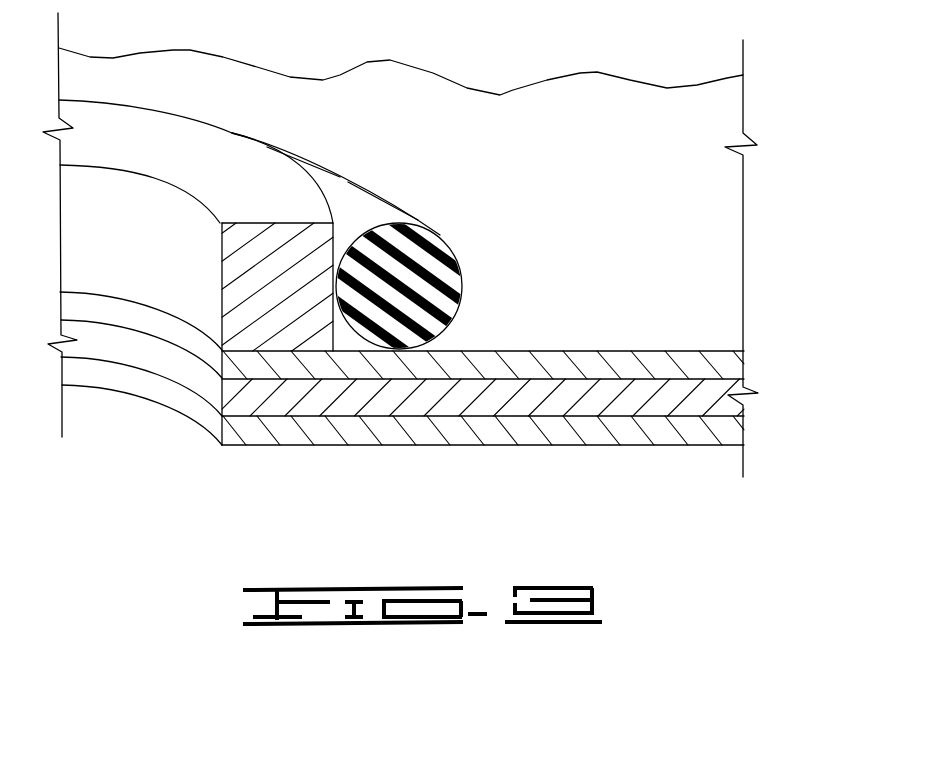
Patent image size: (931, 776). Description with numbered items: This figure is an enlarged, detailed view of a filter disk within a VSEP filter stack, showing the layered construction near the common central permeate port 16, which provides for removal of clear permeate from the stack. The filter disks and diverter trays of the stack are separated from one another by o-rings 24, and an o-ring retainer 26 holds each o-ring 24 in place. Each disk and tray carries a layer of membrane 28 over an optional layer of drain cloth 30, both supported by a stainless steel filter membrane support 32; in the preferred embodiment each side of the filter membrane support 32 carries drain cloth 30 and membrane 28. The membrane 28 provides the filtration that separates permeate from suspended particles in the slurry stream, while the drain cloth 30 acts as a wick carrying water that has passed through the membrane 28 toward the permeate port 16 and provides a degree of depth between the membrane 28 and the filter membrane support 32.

The permeate port 16 is at (131, 440).
The o-ring 24 is at (418, 233).
The o-ring retainer 26 is at (135, 135).
The membrane 28 is at (676, 347).
The drain cloth 30 is at (727, 369).
The stainless steel filter membrane support 32 is at (517, 403).